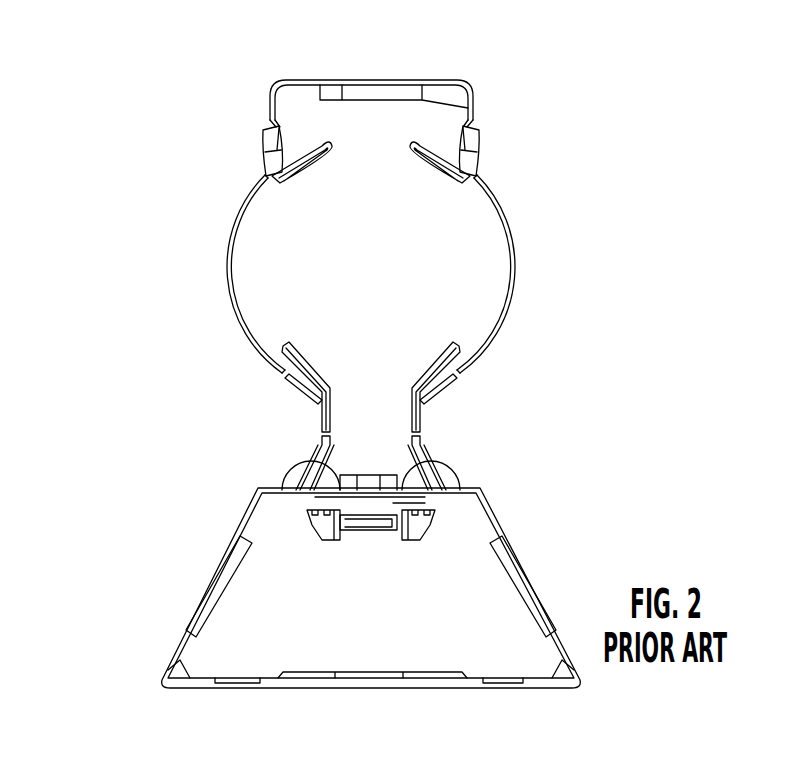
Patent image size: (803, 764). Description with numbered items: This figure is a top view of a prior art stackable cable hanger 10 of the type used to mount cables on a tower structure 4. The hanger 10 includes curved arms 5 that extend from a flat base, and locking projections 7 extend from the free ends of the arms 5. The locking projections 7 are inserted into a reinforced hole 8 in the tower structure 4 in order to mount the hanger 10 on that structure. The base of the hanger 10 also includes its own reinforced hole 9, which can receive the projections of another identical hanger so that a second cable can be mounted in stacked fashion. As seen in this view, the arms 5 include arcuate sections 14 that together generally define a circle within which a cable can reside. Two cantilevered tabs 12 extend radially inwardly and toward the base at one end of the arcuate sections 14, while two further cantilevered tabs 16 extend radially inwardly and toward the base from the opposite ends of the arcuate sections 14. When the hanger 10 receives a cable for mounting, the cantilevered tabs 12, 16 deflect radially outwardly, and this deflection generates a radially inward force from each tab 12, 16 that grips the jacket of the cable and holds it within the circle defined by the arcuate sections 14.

The tower structure 4 is at (530, 687).
The curved arms 5 is at (545, 212).
The locking projections 7 is at (318, 522).
The reinforced hole 8 is at (395, 503).
The reinforced hole 9 is at (338, 98).
The cable hanger 10 is at (605, 292).
The cantilevered tabs 12 is at (408, 158).
The arcuate sections 14 is at (227, 292).
The cantilevered tabs 16 is at (433, 363).